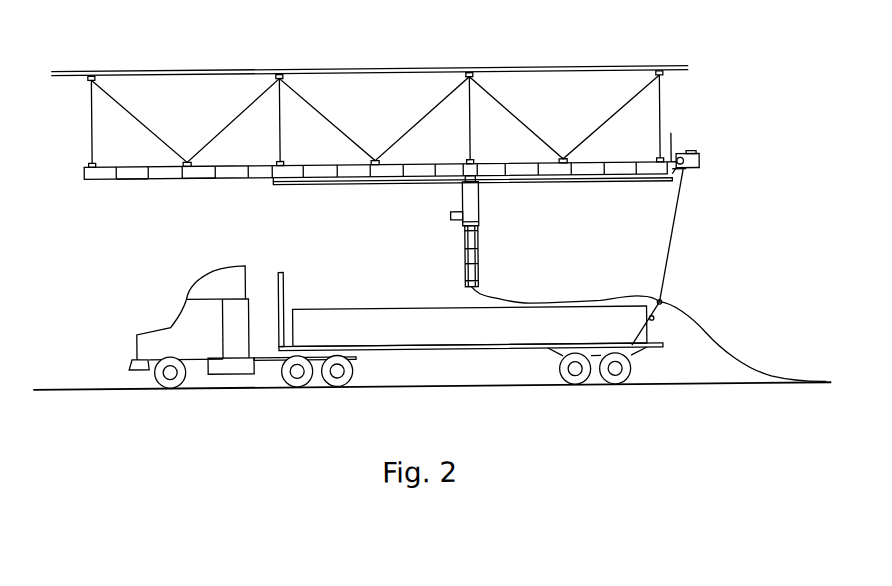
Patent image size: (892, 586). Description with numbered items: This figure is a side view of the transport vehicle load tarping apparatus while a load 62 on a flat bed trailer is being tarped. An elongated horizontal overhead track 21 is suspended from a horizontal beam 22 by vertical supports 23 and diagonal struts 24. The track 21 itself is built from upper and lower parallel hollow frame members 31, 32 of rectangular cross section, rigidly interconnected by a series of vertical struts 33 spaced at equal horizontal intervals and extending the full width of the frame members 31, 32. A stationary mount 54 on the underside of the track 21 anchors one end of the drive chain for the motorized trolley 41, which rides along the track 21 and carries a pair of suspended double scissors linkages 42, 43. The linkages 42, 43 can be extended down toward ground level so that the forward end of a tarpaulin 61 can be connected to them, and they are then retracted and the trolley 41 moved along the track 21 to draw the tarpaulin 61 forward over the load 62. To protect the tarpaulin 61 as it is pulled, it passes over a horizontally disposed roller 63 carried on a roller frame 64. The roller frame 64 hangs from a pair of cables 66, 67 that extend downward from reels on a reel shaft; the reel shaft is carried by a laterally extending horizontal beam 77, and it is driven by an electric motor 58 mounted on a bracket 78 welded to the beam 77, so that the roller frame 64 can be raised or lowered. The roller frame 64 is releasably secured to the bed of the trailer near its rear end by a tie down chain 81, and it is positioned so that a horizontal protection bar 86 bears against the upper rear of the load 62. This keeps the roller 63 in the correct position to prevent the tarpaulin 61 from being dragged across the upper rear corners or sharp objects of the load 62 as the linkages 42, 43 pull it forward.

The overhead track 21 is at (99, 160).
The horizontal beam 22 is at (369, 52).
The vertical supports 23 is at (90, 124).
The diagonal struts 24 is at (228, 124).
The upper hollow frame member 31 is at (230, 164).
The lower hollow frame member 32 is at (197, 177).
The vertical struts 33 is at (143, 177).
The motorized trolley 41 is at (479, 200).
The double scissors linkage 42 is at (417, 250).
The double scissors linkage 43 is at (464, 262).
The stationary mount 54 is at (274, 184).
The electric motor 58 is at (701, 160).
The tarpaulin 61 is at (718, 349).
The load 62 is at (387, 308).
The roller 63 is at (662, 303).
The roller frame 64 is at (650, 302).
The cable 66 is at (704, 235).
The cable 67 is at (670, 246).
The horizontal beam 77 is at (672, 135).
The bracket 78 is at (687, 173).
The tie down chain 81 is at (651, 321).
The horizontal protection bar 86 is at (655, 322).